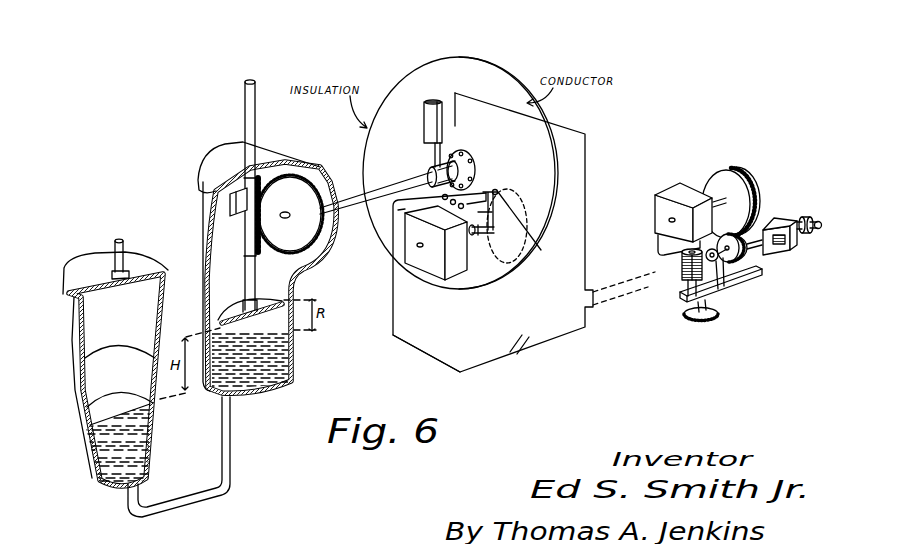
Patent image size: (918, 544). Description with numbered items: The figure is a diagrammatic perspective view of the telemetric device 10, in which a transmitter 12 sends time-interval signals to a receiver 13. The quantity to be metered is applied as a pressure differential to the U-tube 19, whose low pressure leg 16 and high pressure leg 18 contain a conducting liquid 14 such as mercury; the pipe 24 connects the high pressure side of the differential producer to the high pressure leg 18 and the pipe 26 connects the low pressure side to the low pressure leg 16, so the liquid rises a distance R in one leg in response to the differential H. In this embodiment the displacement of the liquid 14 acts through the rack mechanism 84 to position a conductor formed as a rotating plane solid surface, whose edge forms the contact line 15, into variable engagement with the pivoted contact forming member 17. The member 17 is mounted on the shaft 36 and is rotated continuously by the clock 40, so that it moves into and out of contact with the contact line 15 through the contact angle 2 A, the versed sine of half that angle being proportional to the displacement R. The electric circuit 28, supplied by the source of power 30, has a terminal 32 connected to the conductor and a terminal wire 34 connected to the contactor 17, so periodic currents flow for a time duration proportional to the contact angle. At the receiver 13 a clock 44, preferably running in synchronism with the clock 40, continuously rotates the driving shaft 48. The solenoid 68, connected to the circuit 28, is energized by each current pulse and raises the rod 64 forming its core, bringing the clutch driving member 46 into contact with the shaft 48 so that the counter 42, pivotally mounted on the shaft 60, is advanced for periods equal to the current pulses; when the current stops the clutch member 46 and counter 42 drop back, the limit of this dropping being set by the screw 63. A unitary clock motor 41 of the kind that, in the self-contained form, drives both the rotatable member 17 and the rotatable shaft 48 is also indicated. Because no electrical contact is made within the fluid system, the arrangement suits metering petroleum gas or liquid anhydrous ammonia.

The telemetric device 10 is at (380, 65).
The transmitter 12 is at (383, 267).
The receiver 13 is at (738, 285).
The conducting liquid 14 is at (490, 85).
The contact line 15 is at (541, 250).
The low pressure leg 16 is at (284, 358).
The contact forming member 17 is at (500, 203).
The high pressure leg 18 is at (110, 488).
The U-tube 19 is at (190, 497).
The pipe 24 is at (127, 256).
The pipe 26 is at (255, 133).
The electric circuit 28 is at (483, 365).
The source of power 30 is at (531, 350).
The terminal 32 is at (405, 197).
The terminal wire 34 is at (455, 118).
The shaft 36 is at (470, 237).
The clock 40 is at (428, 268).
The clock motor 41 is at (145, 455).
The counter 42 is at (783, 243).
The clock 44 is at (677, 193).
The clutch means 46 is at (735, 257).
The driving shaft 48 is at (747, 168).
The shaft 60 is at (817, 229).
The screw 63 is at (688, 319).
The rod 64 is at (683, 292).
The solenoid 68 is at (680, 270).
The rack mechanism 84 is at (252, 241).
The angle of contact 2A 2 is at (495, 217).